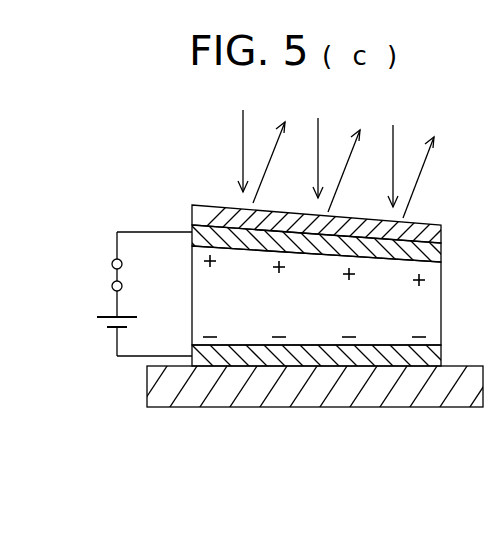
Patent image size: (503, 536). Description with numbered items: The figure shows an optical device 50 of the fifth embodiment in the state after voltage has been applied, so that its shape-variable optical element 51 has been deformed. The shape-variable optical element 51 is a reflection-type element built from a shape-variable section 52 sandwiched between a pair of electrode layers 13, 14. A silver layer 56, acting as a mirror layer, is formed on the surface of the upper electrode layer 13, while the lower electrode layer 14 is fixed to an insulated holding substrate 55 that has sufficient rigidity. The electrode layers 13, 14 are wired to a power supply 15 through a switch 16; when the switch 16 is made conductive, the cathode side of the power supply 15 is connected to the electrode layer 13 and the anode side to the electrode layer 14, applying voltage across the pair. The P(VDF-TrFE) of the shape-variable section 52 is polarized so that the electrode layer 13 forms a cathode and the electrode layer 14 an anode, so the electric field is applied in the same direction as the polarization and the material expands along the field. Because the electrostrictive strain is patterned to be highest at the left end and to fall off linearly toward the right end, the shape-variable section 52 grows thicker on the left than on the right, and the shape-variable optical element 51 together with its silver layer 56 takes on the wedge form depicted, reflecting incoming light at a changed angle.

The optical device 50 is at (157, 178).
The shape-variable optical element 51 is at (437, 212).
The shape-variable section 52 is at (436, 302).
The electrode layer 13 is at (436, 255).
The electrode layer 14 is at (438, 352).
The power supply 15 is at (98, 318).
The switch 16 is at (112, 270).
The insulated holding substrate 55 is at (450, 400).
The silver layer 56 is at (442, 233).